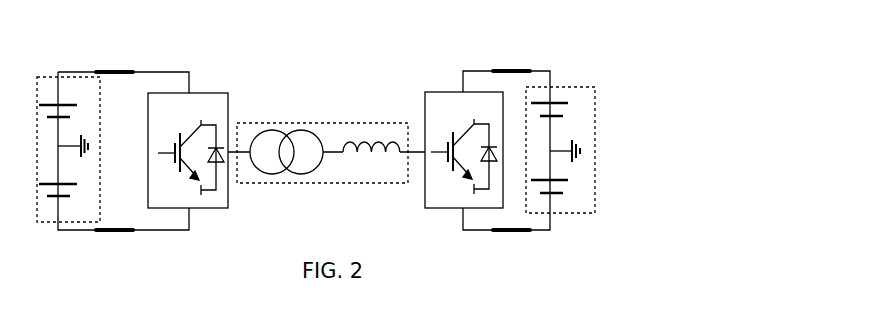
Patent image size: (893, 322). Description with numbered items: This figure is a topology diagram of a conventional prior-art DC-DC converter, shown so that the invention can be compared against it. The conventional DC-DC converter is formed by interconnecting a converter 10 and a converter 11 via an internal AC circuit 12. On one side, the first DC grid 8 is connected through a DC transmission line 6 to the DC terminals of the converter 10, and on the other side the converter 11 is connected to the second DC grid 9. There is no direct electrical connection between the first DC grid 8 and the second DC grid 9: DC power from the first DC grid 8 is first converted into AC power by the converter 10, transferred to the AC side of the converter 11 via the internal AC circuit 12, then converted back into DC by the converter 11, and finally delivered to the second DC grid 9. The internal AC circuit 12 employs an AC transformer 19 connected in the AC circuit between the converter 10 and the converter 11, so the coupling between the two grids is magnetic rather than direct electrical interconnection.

The DC transmission line 6 is at (115, 69).
The first DC grid 8 is at (63, 72).
The second DC grid 9 is at (596, 149).
The converter 10 is at (215, 92).
The converter 11 is at (425, 91).
The internal AC circuit 12 is at (323, 186).
The AC transformer 19 is at (266, 123).